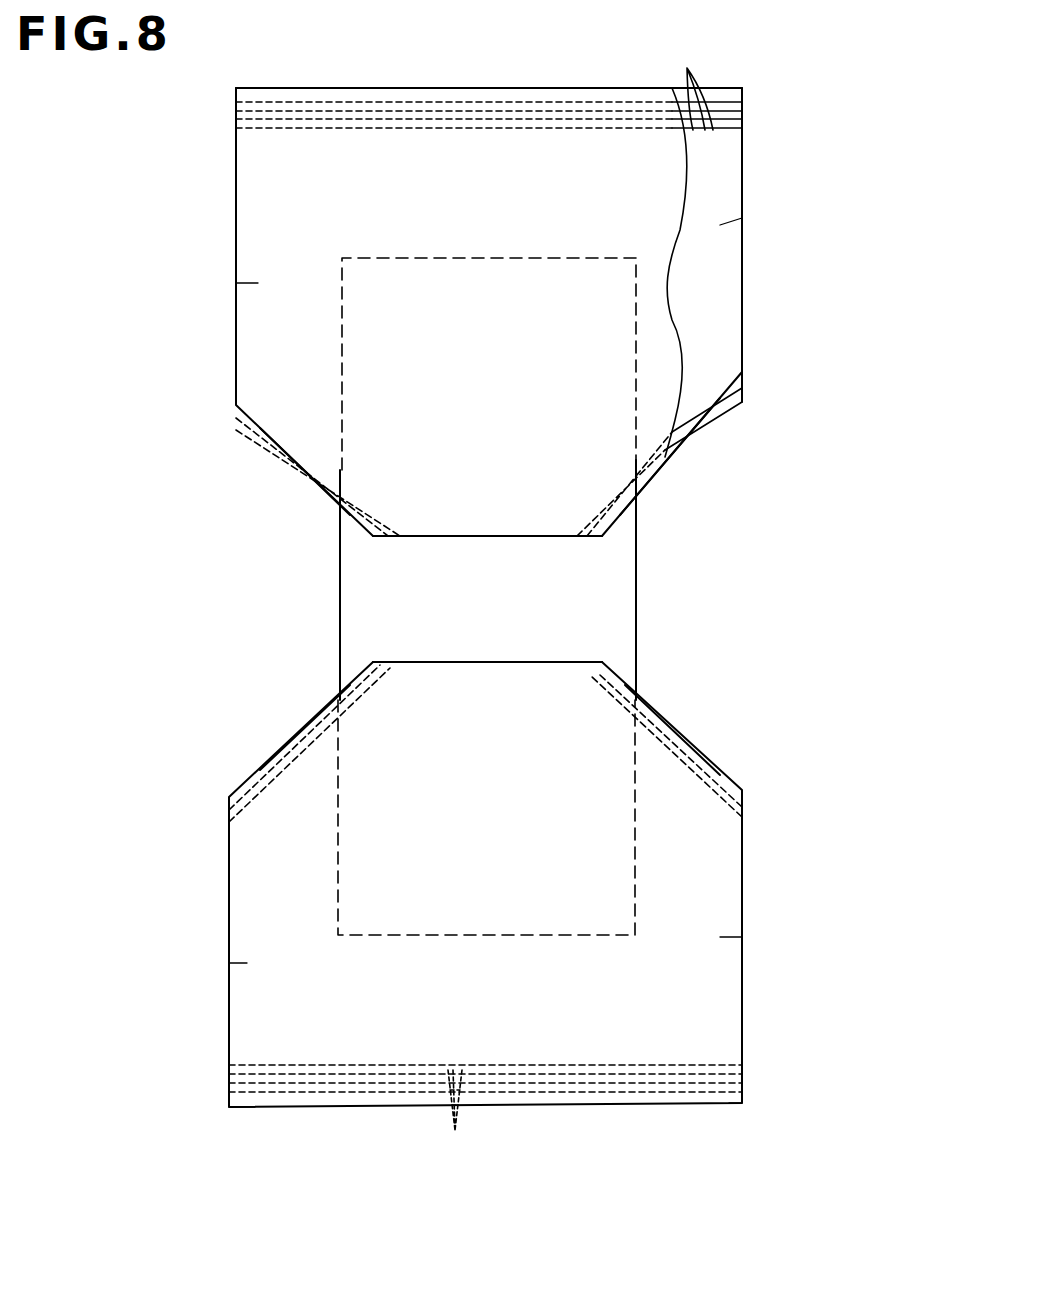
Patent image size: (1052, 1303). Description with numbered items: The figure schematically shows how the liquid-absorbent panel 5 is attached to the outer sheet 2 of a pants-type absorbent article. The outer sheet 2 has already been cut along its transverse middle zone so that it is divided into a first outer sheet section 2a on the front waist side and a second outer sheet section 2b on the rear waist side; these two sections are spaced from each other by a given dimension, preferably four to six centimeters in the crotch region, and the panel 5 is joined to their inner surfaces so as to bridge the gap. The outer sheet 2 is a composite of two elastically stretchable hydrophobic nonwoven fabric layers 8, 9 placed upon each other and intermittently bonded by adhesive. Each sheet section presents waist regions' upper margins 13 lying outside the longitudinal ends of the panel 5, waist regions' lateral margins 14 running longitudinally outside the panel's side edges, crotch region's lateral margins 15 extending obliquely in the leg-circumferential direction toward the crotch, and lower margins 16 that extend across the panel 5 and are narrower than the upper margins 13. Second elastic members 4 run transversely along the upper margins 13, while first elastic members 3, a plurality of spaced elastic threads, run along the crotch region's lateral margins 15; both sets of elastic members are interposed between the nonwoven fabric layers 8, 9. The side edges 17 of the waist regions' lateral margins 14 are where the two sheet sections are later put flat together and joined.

The outer sheet 2 is at (745, 85).
The first outer sheet section 2a is at (229, 1107).
The second outer sheet section 2b is at (236, 88).
The first elastic members 3 is at (272, 418).
The second elastic members 4 is at (575, 599).
The liquid-absorbent panel 5 is at (637, 565).
The nonwoven fabric layer 8 is at (540, 148).
The nonwoven fabric layer 9 is at (725, 290).
The waist regions' upper margins 13 is at (462, 118).
The waist regions' lateral margins 14 is at (258, 283).
The crotch region's lateral margins 15 is at (318, 460).
The lower margins 16 is at (435, 517).
The side edges 17 is at (236, 210).